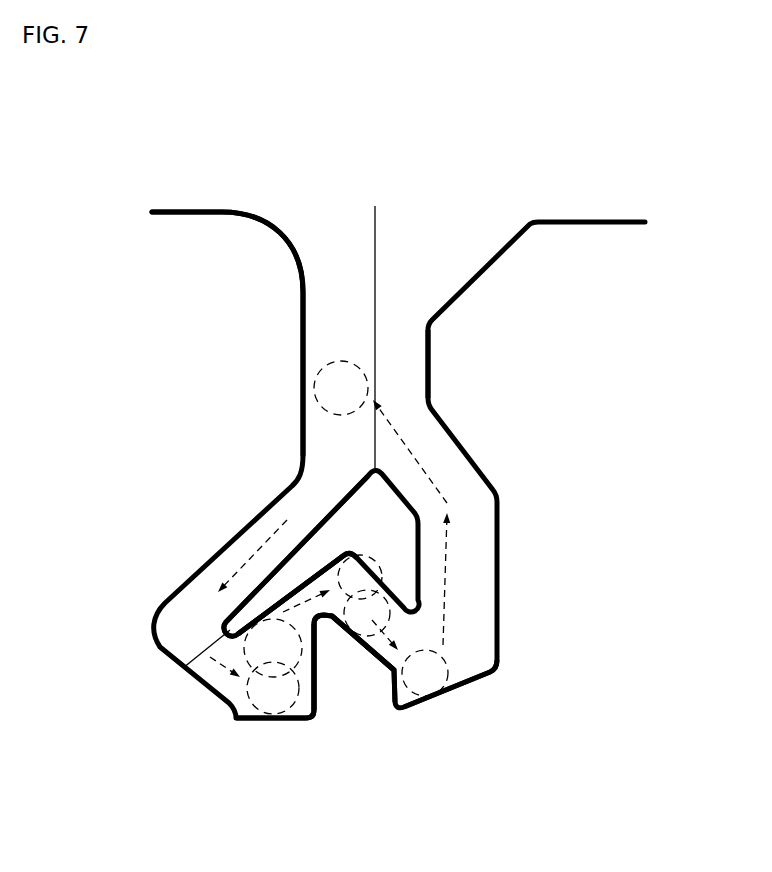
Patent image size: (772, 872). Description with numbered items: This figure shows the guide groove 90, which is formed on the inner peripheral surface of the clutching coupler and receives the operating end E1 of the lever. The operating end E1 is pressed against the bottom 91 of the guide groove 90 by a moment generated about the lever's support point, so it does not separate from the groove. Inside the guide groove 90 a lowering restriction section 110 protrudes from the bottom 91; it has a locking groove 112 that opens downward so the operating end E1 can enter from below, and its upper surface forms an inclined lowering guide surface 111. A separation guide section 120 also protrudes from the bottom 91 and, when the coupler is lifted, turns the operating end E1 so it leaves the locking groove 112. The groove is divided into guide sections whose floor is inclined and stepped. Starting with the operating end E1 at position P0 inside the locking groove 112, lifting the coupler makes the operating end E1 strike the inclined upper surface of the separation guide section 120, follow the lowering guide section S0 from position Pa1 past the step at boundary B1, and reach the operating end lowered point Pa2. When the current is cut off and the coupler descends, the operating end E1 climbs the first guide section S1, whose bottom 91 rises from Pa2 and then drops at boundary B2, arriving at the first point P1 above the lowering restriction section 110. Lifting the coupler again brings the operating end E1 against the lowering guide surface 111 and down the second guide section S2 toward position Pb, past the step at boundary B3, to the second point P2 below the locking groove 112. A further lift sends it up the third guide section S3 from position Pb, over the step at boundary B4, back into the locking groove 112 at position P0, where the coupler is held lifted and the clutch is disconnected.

The guide groove 90 is at (466, 452).
The bottom of the guide groove 91 is at (320, 463).
The lowering restriction section 110 is at (392, 525).
The lowering guide surface 111 is at (263, 572).
The locking groove 112 is at (353, 660).
The separation guide section 120 is at (330, 624).
The operating end E1 is at (327, 553).
The first guide section S1 is at (477, 575).
The second guide section S2 is at (197, 592).
The third guide section S3 is at (322, 630).
The lowering guide section S0 is at (393, 622).
The boundary B1 is at (400, 633).
The boundary B2 is at (380, 350).
The boundary B3 is at (200, 655).
The boundary B4 is at (312, 655).
The first point P1 is at (341, 388).
The position P0 is at (360, 577).
The position Pa1 is at (367, 613).
The operating end lowered point Pa2 is at (425, 673).
The position Pb is at (287, 633).
The second point P2 is at (273, 688).